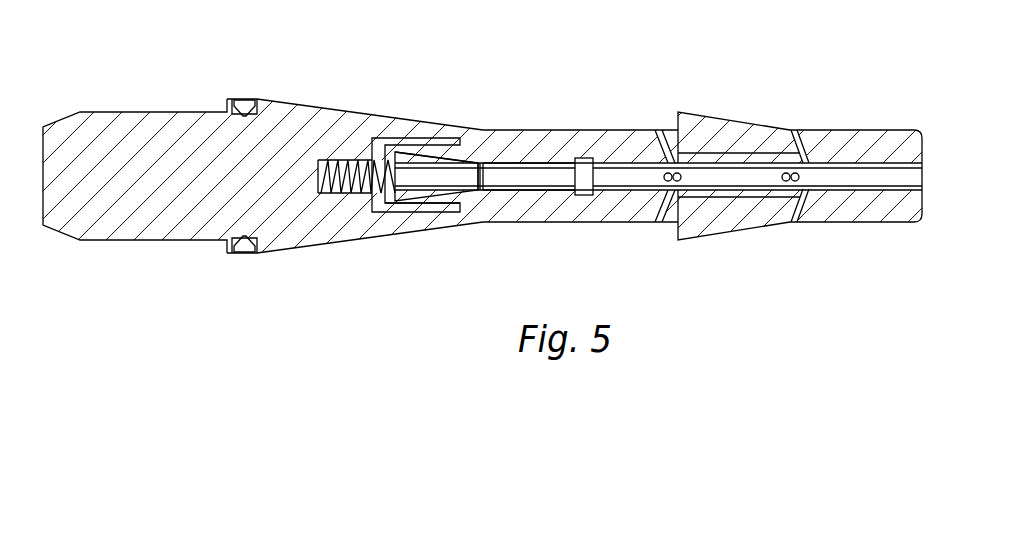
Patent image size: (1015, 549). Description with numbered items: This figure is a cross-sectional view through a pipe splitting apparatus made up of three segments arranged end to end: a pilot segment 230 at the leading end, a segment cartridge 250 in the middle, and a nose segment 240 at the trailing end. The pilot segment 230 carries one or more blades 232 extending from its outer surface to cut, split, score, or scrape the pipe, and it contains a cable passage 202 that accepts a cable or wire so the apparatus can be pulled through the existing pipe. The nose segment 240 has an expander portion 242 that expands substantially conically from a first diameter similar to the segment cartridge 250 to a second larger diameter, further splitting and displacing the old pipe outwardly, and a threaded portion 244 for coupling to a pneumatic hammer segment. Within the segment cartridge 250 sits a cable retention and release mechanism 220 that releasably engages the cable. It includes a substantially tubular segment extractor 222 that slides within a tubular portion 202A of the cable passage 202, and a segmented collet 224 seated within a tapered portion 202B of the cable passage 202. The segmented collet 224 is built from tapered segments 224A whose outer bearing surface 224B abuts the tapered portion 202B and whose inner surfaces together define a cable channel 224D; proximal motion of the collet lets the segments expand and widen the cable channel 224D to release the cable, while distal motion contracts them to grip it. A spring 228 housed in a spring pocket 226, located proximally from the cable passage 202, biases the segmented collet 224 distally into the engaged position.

The cable passage 202 is at (912, 180).
The tubular portion 202A is at (500, 192).
The tapered portion 202B is at (438, 202).
The cable retention and release mechanism 220 is at (532, 196).
The segment extractor 222 is at (537, 163).
The segmented collet 224 is at (440, 148).
The tapered segments 224A is at (428, 150).
The outer bearing surface 224B is at (450, 212).
The cable channel 224D is at (450, 177).
The spring pocket 226 is at (333, 195).
The spring 228 is at (317, 183).
The pilot segment 230 is at (860, 130).
The blades 232 is at (707, 122).
The nose segment 240 is at (280, 100).
The expander portion 242 is at (295, 110).
The threaded portion 244 is at (145, 120).
The segment cartridge 250 is at (567, 128).